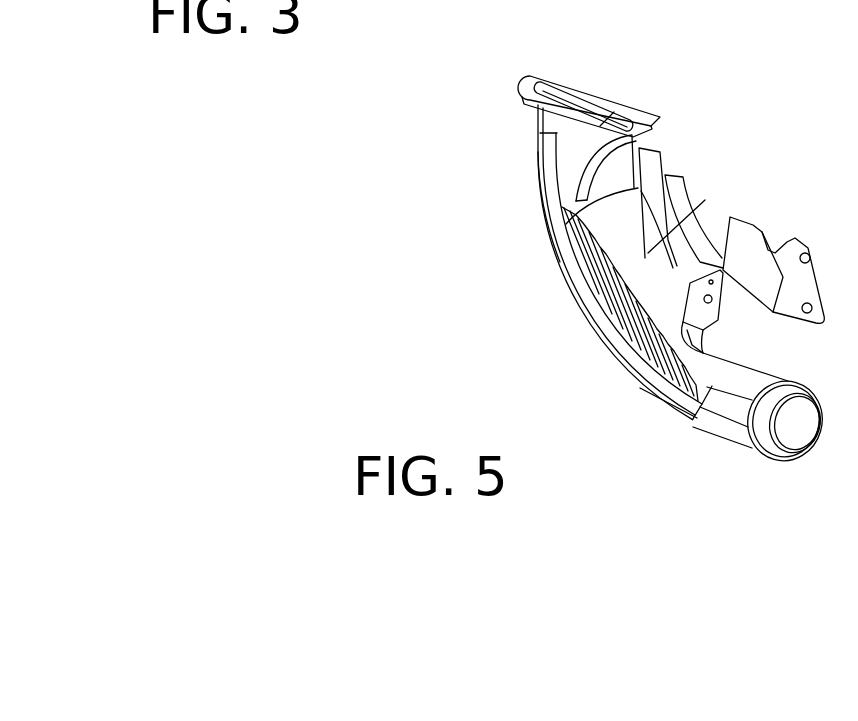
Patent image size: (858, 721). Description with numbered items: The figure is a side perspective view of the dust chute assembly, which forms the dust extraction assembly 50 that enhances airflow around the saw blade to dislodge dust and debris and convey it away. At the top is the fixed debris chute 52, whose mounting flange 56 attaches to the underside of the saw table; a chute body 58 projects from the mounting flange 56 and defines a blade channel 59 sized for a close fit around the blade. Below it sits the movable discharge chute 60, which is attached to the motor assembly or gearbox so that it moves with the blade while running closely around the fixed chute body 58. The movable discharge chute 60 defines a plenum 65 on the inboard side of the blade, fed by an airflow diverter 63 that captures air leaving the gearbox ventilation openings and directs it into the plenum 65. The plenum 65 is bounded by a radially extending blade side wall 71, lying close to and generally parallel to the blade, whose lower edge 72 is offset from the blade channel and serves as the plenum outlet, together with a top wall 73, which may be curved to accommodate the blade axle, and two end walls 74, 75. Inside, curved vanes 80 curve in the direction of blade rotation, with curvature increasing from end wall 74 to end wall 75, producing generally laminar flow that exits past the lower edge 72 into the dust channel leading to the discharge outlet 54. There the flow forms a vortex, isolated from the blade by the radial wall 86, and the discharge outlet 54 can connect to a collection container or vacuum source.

The dust extraction assembly 50 is at (603, 350).
The fixed debris chute 52 is at (528, 85).
The discharge outlet 54 is at (760, 443).
The mounting flange 56 is at (578, 83).
The chute body 58 is at (580, 133).
The blade channel 59 is at (612, 115).
The movable discharge chute 60 is at (550, 192).
The airflow diverter 63 is at (680, 177).
The plenum 65 is at (658, 238).
The blade side wall 71 is at (613, 225).
The lower edge 72 is at (587, 280).
The top wall 73 is at (705, 228).
The end wall 74 is at (640, 145).
The end wall 75 is at (670, 300).
The curved vanes 80 is at (683, 377).
The radial wall 86 is at (710, 387).